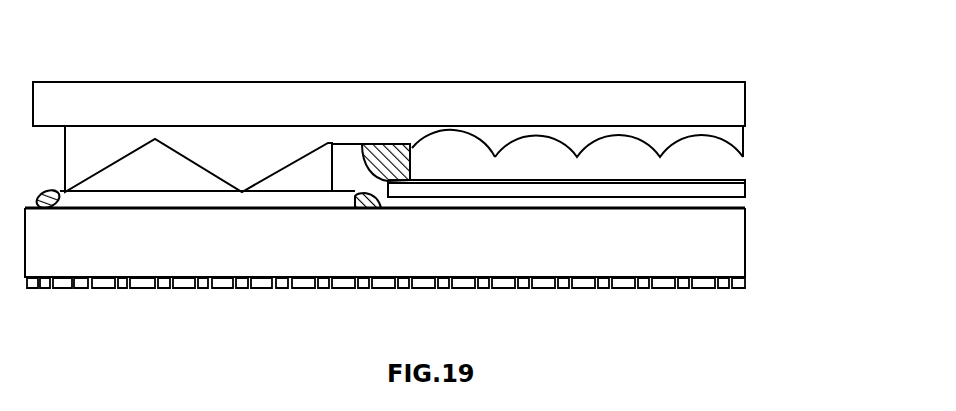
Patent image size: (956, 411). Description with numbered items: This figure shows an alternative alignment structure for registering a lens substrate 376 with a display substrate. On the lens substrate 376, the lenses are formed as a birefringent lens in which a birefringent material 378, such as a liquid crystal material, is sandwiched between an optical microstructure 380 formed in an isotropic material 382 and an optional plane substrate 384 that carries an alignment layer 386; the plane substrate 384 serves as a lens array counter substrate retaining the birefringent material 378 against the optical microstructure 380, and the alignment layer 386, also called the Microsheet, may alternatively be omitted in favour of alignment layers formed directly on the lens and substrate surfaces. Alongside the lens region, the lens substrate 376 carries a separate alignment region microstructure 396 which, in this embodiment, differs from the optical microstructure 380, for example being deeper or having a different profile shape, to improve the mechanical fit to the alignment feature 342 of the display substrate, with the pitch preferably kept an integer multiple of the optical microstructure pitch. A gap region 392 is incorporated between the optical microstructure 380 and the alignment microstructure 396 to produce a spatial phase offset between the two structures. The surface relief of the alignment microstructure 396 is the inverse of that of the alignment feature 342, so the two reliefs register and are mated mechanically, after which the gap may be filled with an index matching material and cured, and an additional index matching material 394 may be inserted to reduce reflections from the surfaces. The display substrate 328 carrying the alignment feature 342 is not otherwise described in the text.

The lens substrate 376 is at (387, 82).
The alignment region microstructure 396 is at (133, 208).
The gap region 392 is at (362, 145).
The birefringent material 378 is at (448, 156).
The optical microstructure 380 is at (545, 135).
The isotropic material 382 is at (732, 127).
The alignment layer 386 is at (745, 181).
The plane substrate 384 is at (745, 193).
The index matching material 394 is at (733, 203).
The substrate 328 is at (747, 242).
The alignment feature 342 is at (133, 208).